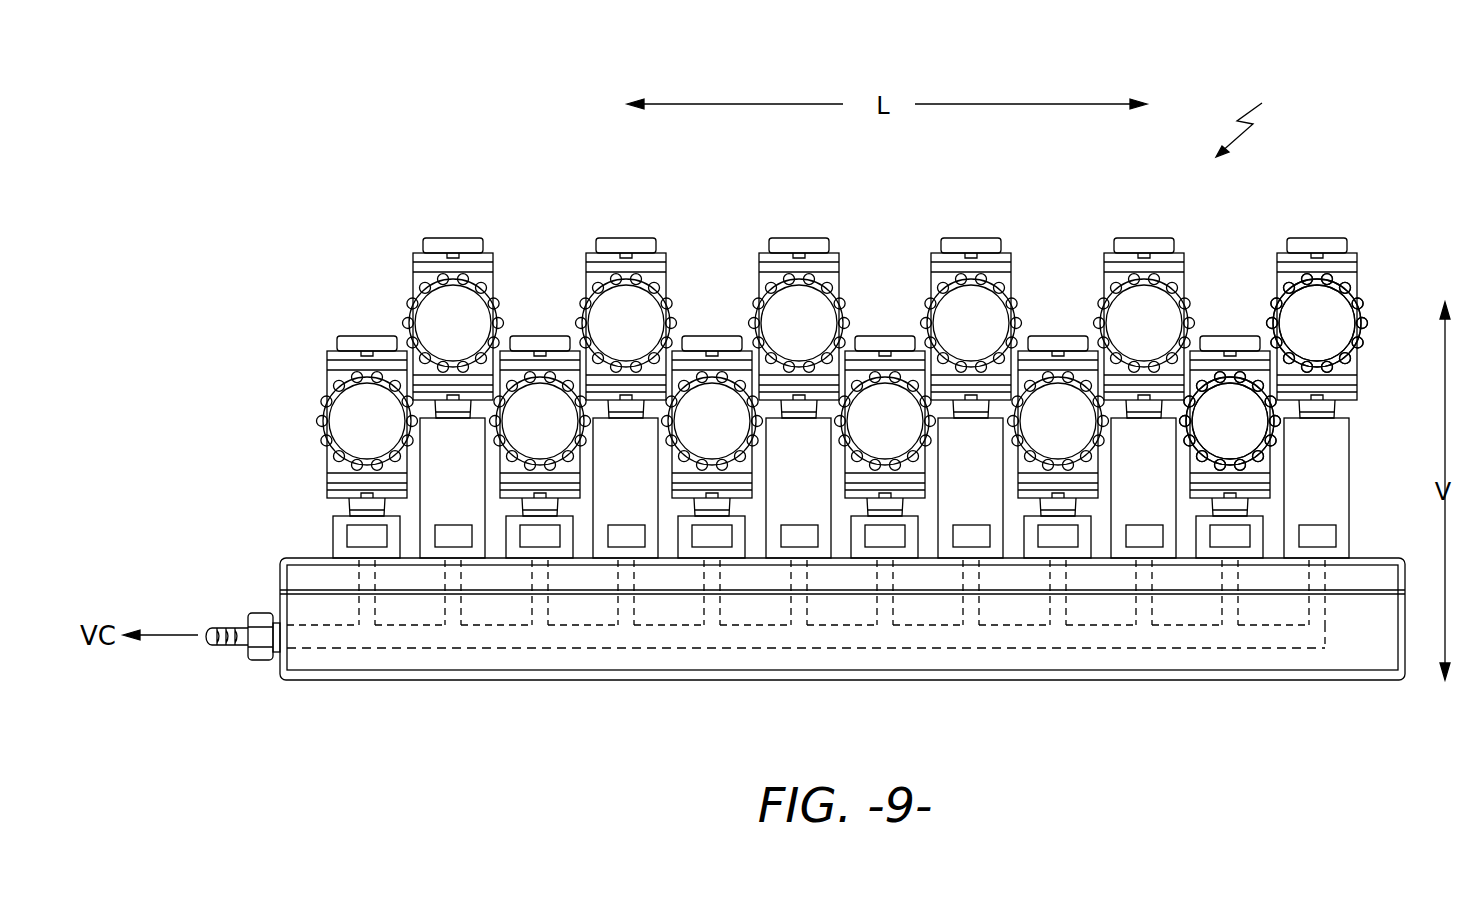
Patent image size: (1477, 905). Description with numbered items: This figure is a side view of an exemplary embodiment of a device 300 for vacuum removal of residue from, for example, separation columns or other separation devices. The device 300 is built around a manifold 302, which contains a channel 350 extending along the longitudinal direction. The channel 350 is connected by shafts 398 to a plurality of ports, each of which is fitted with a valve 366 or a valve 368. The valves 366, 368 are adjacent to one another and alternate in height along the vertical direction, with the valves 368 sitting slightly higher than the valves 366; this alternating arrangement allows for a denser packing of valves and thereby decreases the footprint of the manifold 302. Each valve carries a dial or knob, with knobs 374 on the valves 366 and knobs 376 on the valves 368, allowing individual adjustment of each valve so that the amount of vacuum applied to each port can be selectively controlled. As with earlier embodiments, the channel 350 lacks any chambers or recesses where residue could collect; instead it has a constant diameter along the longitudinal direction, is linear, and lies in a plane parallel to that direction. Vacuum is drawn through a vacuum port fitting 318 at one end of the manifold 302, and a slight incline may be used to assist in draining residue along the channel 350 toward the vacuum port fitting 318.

The device 300 is at (1266, 114).
The manifold 302 is at (1358, 647).
The vacuum port fitting 318 is at (262, 612).
The channel 350 is at (1106, 638).
The valve 366 is at (379, 335).
The valve 368 is at (445, 237).
The dial or knob 374 is at (1250, 430).
The dial or knob 376 is at (1338, 321).
The shaft 398 is at (447, 598).